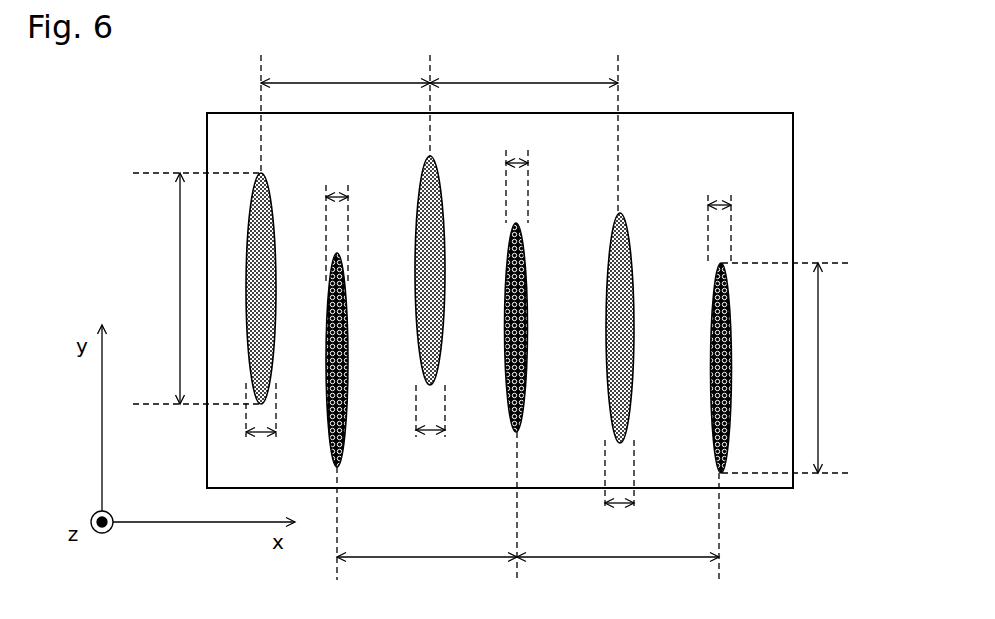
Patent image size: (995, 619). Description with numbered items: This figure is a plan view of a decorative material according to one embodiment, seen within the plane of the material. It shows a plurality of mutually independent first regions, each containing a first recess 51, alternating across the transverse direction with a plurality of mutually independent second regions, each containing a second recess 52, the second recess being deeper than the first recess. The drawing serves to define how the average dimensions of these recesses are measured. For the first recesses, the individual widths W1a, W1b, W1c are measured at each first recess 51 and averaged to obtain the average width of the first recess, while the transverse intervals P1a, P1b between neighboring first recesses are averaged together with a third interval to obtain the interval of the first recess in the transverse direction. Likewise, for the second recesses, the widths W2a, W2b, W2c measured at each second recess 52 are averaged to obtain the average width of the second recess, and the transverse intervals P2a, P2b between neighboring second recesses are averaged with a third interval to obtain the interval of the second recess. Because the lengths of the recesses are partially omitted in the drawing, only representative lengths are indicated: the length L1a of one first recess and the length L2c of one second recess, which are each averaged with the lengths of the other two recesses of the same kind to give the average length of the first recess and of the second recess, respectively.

The first recess 51 is at (624, 235).
The second recess 52 is at (728, 440).
The interval of the first recess in the transverse direction P1a is at (345, 114).
The interval of the first recess in the transverse direction P1b is at (524, 134).
The interval of the second recess in the transverse direction P2a is at (427, 508).
The interval of the second recess in the transverse direction P2b is at (618, 529).
The width of the first recess W1a is at (261, 425).
The width of the first recess W1b is at (430, 426).
The width of the first recess W1c is at (619, 492).
The width of the second recess W2a is at (337, 224).
The width of the second recess W2b is at (517, 176).
The width of the second recess W2c is at (719, 217).
The length of the first recess L1a is at (197, 288).
The length of the second recess L2c is at (790, 368).